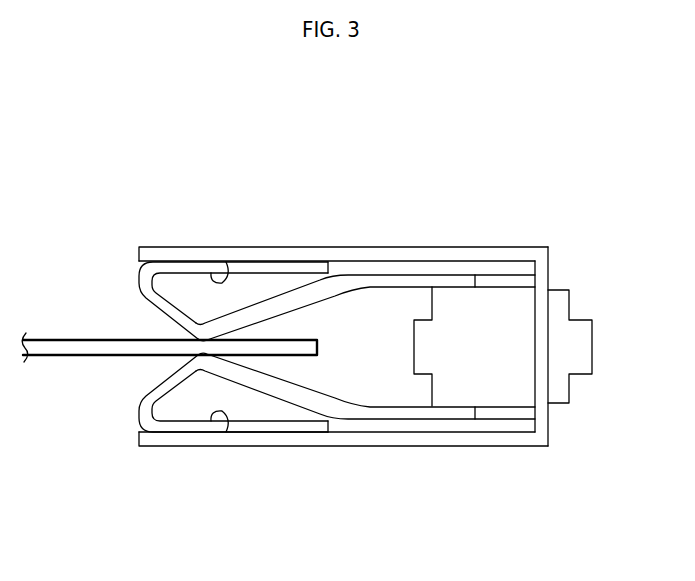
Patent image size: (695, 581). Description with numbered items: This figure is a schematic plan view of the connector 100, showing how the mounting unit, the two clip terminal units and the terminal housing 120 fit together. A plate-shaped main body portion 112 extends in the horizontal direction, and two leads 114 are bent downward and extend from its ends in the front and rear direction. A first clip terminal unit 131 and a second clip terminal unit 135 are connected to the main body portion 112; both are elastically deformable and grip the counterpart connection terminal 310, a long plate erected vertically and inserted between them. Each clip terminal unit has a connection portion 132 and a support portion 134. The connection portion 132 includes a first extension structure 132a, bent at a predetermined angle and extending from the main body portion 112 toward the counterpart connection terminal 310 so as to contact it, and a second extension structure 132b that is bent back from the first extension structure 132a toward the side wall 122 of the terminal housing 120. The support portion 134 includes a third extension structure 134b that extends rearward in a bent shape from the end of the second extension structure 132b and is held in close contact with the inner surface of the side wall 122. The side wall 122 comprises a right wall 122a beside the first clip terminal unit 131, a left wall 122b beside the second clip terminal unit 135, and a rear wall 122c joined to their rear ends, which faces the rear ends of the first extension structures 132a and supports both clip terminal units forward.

The connector 100 is at (114, 105).
The counterpart connection terminal 310 is at (48, 339).
The terminal housing 120 is at (531, 230).
The side wall 122 is at (612, 543).
The right wall 122a is at (466, 447).
The left wall 122b is at (467, 247).
The rear wall 122c is at (548, 429).
The main body portion 112 is at (521, 305).
The lead 114 is at (593, 347).
The second clip terminal unit 135 is at (411, 275).
The first clip terminal unit 131 is at (404, 421).
The support portion 134 is at (207, 176).
The connection portion 132 is at (332, 523).
The first extension structure 132a is at (326, 284).
The second extension structure 132b is at (174, 308).
The third extension structure 134b is at (226, 262).